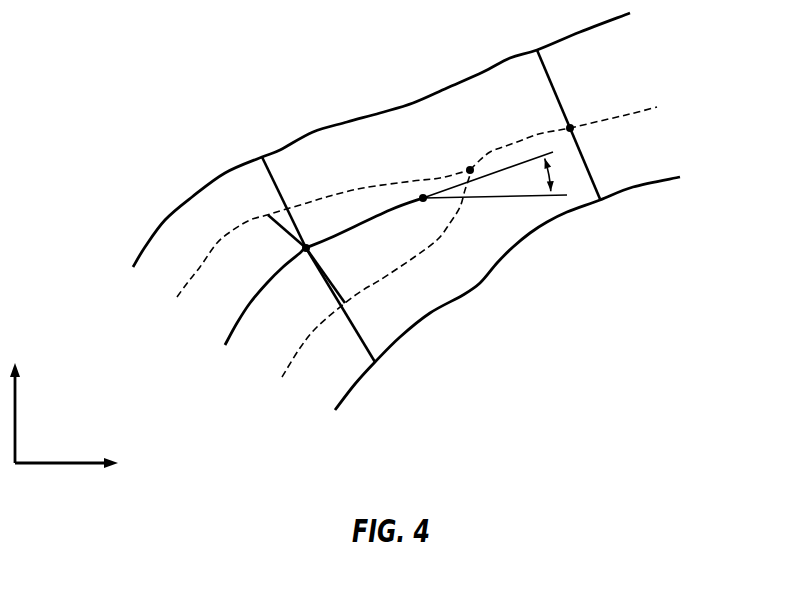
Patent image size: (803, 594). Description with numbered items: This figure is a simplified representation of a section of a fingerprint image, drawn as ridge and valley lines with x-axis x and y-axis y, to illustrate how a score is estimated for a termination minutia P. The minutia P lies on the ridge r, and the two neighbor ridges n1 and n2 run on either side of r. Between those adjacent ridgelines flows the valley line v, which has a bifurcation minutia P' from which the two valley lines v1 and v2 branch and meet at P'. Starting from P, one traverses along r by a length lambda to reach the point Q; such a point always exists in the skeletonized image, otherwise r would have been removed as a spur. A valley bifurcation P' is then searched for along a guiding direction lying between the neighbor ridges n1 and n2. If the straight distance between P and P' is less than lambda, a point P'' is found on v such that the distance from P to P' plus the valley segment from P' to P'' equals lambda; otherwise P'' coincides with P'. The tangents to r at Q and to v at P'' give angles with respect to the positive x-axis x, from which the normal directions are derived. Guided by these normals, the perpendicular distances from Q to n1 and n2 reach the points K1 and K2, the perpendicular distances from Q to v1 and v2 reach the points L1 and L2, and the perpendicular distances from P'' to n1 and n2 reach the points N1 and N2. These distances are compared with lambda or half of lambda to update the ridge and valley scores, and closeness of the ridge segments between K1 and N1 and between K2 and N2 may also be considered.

The neighbor ridge n1 is at (402, 133).
The neighbor ridge n2 is at (528, 282).
The perpendicular foot on neighbor ridge n1 K1 is at (272, 180).
The perpendicular foot on neighbor ridge n2 K2 is at (360, 334).
The perpendicular foot on valley line v1 L1 is at (272, 211).
The perpendicular foot on valley line v2 L2 is at (348, 297).
The perpendicular foot on neighbor ridge n1 from P'' N1 is at (539, 64).
The perpendicular foot on neighbor ridge n2 from P'' N2 is at (603, 194).
The ridge r is at (317, 291).
The point on ridgeline r Q is at (300, 274).
The valley line v1 is at (313, 254).
The valley line v is at (578, 125).
The valley line v2 is at (366, 300).
The termination minutia P is at (489, 198).
The bifurcation minutia of valley line v P' is at (481, 151).
The point on valley line v P'' is at (588, 106).
The x-axis x is at (79, 461).
The y-axis y is at (16, 389).